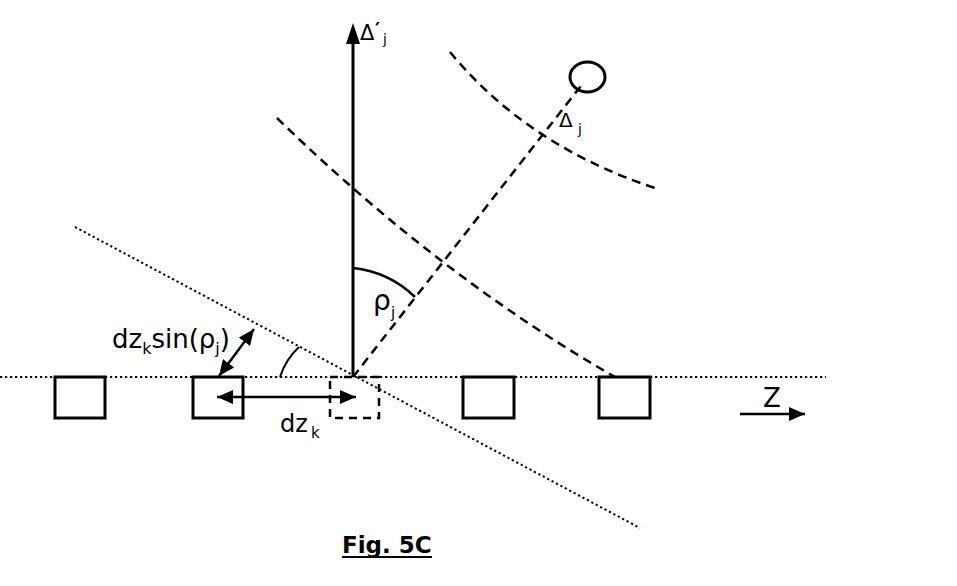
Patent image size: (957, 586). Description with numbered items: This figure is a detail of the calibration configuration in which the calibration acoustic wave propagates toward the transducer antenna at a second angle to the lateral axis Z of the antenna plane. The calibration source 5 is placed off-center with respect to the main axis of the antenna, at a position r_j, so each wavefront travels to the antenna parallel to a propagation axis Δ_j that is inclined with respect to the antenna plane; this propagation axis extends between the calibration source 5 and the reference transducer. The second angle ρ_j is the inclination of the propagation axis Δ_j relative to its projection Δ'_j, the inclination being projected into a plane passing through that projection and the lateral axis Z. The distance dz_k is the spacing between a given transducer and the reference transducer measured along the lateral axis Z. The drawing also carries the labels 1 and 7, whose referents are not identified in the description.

The transducer elements 1 is at (80, 419).
The calibration source 5 is at (621, 74).
The wavefront 7 is at (612, 585).